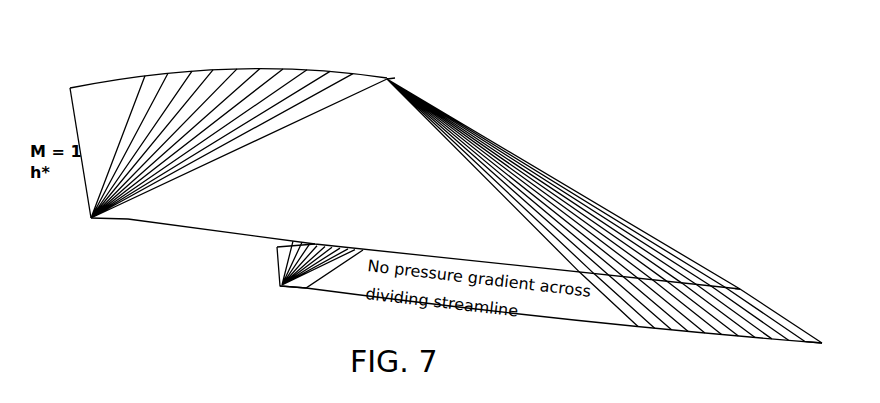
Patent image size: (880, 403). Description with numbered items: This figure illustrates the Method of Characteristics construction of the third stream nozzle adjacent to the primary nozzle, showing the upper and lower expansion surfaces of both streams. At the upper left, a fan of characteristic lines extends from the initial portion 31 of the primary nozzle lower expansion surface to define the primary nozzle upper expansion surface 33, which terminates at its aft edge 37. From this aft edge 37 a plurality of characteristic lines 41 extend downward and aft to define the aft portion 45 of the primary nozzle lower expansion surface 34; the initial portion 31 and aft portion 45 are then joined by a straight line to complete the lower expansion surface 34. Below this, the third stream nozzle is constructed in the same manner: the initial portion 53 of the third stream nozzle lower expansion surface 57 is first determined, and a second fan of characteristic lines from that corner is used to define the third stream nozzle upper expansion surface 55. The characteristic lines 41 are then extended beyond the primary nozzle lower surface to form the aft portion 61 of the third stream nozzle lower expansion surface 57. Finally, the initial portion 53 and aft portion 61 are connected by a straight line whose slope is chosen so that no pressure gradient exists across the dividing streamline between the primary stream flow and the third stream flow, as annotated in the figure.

The initial portion of the primary stream nozzle lower expansion surface 31 is at (108, 221).
The upper expansion surface 33 is at (207, 64).
The lower expansion surface 34 is at (434, 245).
The aft edge of the primary nozzle upper expansion surface 37 is at (388, 79).
The characteristic lines 41 is at (623, 218).
The aft portion of the lower expansion surface 45 is at (703, 289).
The initial portion of the third stream nozzle lower expansion surface 53 is at (296, 290).
The third stream nozzle upper expansion surface 55 is at (309, 238).
The third stream nozzle lower expansion surface 57 is at (537, 330).
The aft portion of the third stream nozzle lower expansion surface 61 is at (720, 342).